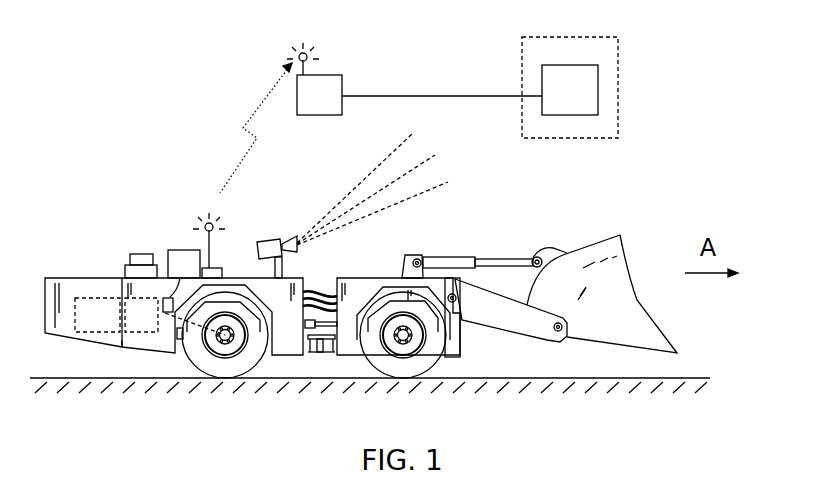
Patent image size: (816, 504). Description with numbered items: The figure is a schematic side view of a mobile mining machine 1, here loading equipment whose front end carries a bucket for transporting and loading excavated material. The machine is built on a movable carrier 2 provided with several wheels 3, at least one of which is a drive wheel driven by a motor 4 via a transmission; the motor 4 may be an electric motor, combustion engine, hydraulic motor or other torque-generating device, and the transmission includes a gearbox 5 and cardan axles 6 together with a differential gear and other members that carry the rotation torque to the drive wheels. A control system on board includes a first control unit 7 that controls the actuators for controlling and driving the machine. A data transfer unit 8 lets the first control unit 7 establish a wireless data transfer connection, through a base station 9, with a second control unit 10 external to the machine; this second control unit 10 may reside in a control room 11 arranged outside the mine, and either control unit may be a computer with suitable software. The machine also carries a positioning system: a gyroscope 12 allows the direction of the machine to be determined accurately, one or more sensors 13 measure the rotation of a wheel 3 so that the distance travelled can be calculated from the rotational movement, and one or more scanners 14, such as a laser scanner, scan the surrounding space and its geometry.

The mobile mining machine 1 is at (166, 170).
The movable carrier 2 is at (357, 278).
The wheels 3 is at (215, 365).
The motor 4 is at (87, 297).
The gearbox 5 is at (130, 335).
The cardan axles 6 is at (190, 327).
The first control unit 7 is at (183, 257).
The data transfer unit 8 is at (217, 268).
The base station 9 is at (314, 79).
The second control unit 10 is at (570, 90).
The control room 11 is at (580, 53).
The gyroscope 12 is at (130, 257).
The sensors 13 is at (160, 333).
The scanners 14 is at (270, 238).